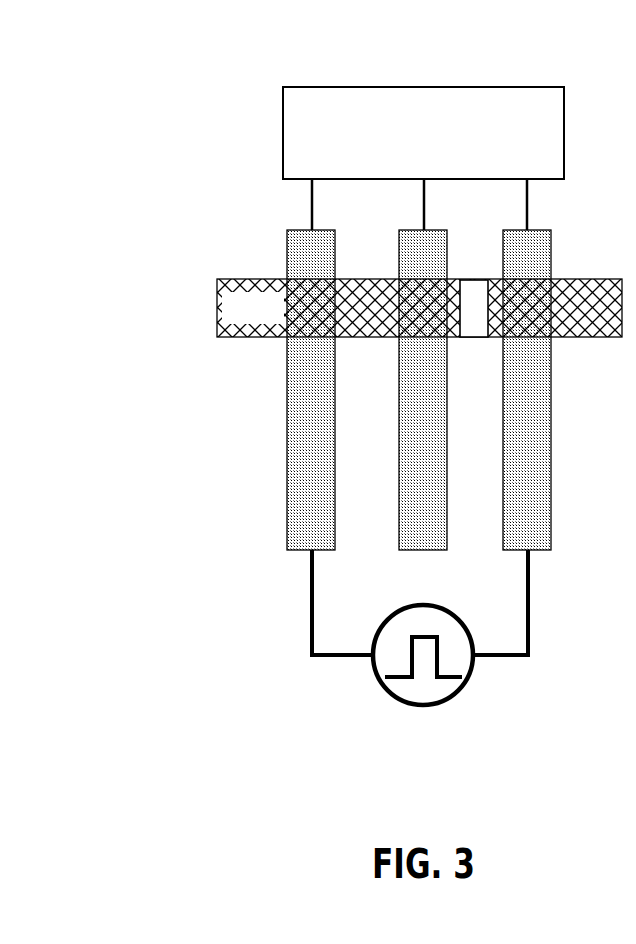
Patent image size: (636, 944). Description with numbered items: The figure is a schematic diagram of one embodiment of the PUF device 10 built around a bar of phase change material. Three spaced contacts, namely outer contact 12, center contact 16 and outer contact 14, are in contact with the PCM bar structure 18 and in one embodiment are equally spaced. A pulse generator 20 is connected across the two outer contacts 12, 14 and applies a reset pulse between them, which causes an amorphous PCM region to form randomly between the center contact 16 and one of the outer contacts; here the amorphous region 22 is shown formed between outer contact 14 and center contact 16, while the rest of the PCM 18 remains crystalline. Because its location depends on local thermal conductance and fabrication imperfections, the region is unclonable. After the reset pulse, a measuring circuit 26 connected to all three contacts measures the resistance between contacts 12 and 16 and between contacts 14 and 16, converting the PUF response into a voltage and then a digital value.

The PUF device 10 is at (433, 44).
The measuring circuit 26 is at (435, 164).
The outer contact 12 is at (326, 522).
The center contact 16 is at (436, 522).
The outer contact 14 is at (541, 522).
The PCM bar structure 18 is at (603, 318).
The amorphous region 22 is at (472, 323).
The pulse generator 20 is at (385, 690).